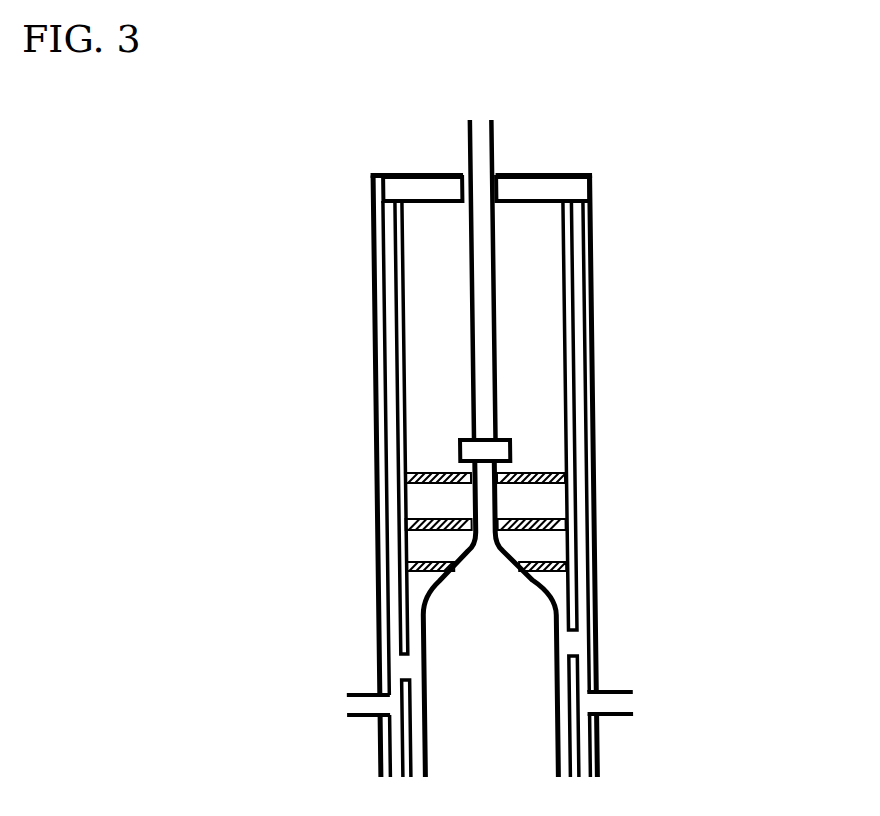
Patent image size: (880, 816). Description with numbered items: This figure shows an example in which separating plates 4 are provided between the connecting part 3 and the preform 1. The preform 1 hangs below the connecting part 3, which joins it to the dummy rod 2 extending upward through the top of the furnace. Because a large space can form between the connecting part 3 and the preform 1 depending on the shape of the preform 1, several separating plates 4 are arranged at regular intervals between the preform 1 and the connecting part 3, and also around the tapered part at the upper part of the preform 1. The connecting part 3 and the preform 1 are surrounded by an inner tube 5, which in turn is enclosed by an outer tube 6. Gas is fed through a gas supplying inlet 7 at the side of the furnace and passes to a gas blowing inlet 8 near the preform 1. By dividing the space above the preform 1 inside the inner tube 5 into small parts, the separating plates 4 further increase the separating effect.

The preform 1 is at (520, 612).
The dummy rod 2 is at (481, 165).
The connecting part 3 is at (492, 448).
The separating plate 4 is at (444, 471).
The inner tube 5 is at (574, 372).
The outer tube 6 is at (596, 288).
The gas supplying inlet 7 is at (356, 707).
The gas blowing inlet 8 is at (400, 663).